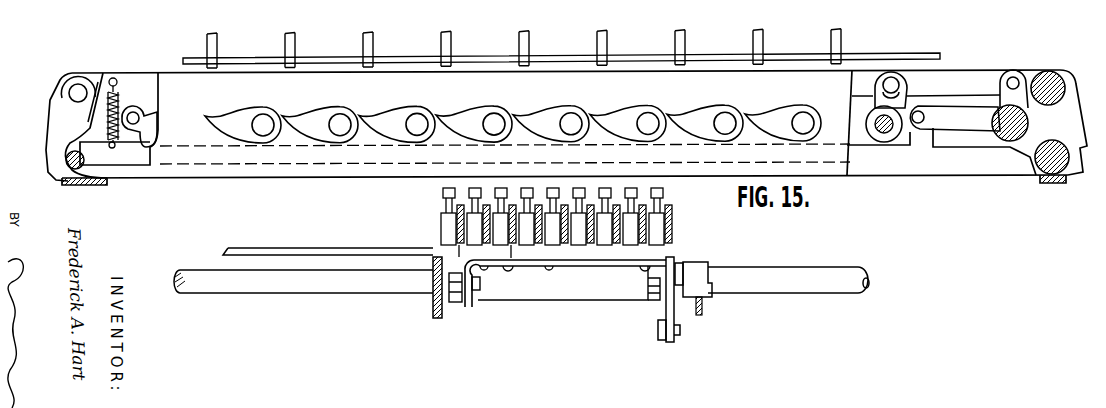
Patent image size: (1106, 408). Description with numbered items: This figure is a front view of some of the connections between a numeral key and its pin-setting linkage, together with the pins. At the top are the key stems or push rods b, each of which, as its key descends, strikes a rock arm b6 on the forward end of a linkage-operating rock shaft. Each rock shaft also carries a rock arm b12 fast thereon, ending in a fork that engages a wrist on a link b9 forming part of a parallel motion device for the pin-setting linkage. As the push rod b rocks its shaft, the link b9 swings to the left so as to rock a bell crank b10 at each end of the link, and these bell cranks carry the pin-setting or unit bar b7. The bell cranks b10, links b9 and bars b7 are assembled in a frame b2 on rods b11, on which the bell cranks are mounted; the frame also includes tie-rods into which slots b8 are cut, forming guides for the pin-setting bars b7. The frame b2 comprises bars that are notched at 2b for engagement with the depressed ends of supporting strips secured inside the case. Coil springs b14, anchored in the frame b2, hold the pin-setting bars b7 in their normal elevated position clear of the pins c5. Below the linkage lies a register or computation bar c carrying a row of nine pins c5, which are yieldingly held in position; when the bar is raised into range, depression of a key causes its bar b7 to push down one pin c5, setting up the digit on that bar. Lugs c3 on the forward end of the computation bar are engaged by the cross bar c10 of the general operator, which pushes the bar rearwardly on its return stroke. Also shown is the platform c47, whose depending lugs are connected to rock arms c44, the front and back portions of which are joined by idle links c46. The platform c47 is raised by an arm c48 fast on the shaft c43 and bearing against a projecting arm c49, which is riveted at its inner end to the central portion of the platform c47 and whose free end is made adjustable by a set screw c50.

The notches 2b is at (46, 150).
The push rods b is at (440, 47).
The frame b2 is at (60, 96).
The rock arm b6 is at (406, 108).
The pin-setting bar b7 is at (890, 157).
The slots b8 is at (86, 171).
The link b9 is at (970, 78).
The bell crank b10 is at (955, 118).
The rods b11 is at (1029, 118).
The rock arm b12 is at (905, 82).
The coil spring b14 is at (122, 106).
The computation bar c is at (672, 208).
The lugs c3 is at (499, 271).
The pin c5 is at (443, 193).
The cross bar c10 is at (316, 247).
The shaft c43 is at (521, 280).
The rock arms c44 is at (683, 332).
The idle links c46 is at (667, 342).
The platform c47 is at (597, 264).
The arm c48 is at (683, 262).
The projecting arm c49 is at (612, 268).
The set screw c50 is at (651, 289).